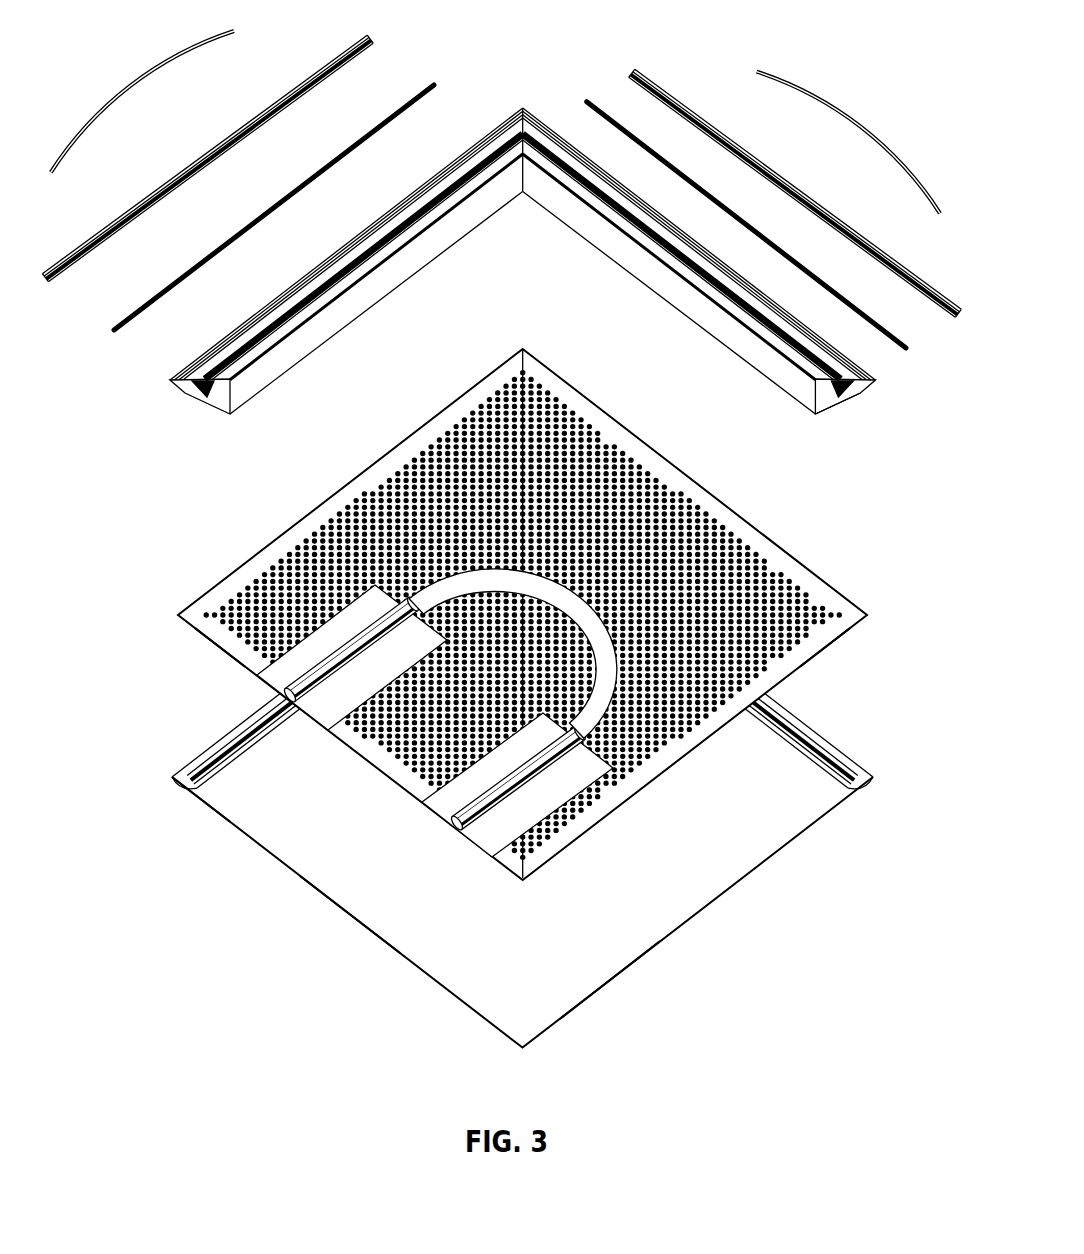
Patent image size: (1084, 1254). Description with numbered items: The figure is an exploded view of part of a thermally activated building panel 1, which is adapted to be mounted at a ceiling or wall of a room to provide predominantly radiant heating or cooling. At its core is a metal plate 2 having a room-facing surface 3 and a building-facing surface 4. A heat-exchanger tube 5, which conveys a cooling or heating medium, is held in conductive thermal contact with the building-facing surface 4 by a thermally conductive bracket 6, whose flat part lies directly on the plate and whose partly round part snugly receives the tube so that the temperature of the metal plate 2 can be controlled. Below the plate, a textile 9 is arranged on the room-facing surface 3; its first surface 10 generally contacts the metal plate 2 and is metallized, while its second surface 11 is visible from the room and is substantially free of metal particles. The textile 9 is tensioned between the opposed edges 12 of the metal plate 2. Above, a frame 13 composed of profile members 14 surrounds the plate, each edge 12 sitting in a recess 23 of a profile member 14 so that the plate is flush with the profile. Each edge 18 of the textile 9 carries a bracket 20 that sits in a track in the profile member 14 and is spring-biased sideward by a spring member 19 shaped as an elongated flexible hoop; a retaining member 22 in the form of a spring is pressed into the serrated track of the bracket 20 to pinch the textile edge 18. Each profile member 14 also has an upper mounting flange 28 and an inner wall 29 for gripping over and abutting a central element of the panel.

The thermally activated building panel 1 is at (175, 866).
The metal plate 2 is at (213, 646).
The room-facing surface 3 is at (820, 662).
The building-facing surface 4 is at (808, 578).
The heat-exchanger tube 5 is at (574, 597).
The thermally conductive bracket 6 is at (462, 843).
The textile 9 is at (719, 901).
The first surface 10 is at (380, 905).
The second surface 11 is at (608, 989).
The opposed edges 12 is at (398, 443).
The frame 13 is at (491, 126).
The profile member 14 is at (197, 353).
The edge of the textile 18 is at (194, 768).
The spring member 19 is at (146, 84).
The bracket 20 is at (350, 49).
The retaining member 22 is at (406, 101).
The recess 23 is at (205, 406).
The upper mounting flange 28 is at (648, 288).
The inner wall 29 is at (812, 405).